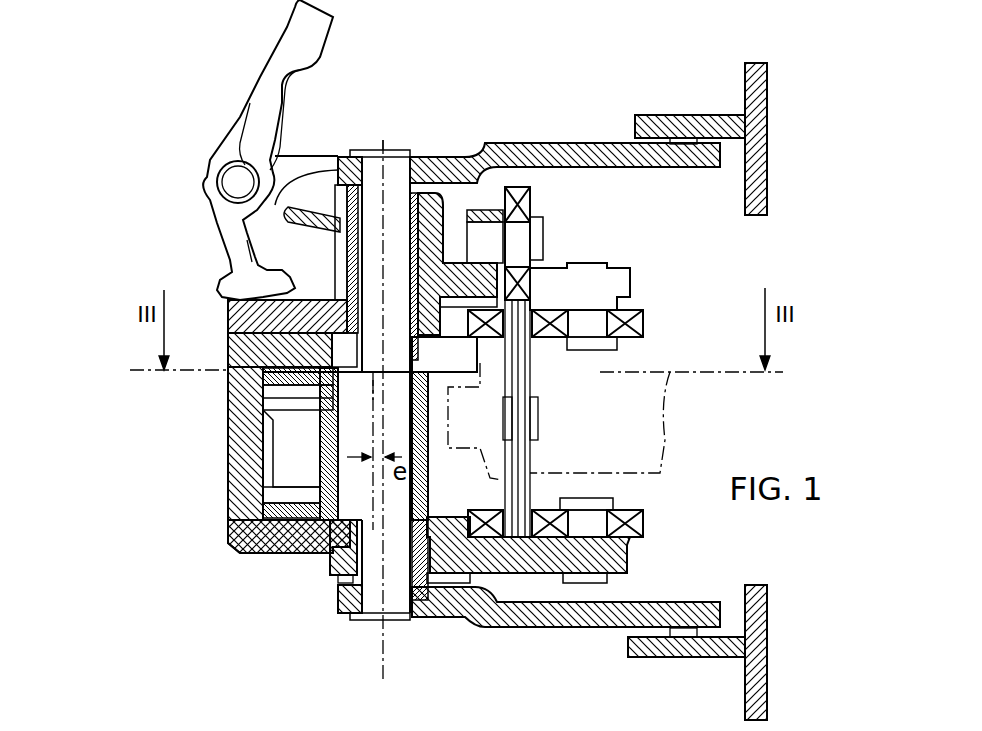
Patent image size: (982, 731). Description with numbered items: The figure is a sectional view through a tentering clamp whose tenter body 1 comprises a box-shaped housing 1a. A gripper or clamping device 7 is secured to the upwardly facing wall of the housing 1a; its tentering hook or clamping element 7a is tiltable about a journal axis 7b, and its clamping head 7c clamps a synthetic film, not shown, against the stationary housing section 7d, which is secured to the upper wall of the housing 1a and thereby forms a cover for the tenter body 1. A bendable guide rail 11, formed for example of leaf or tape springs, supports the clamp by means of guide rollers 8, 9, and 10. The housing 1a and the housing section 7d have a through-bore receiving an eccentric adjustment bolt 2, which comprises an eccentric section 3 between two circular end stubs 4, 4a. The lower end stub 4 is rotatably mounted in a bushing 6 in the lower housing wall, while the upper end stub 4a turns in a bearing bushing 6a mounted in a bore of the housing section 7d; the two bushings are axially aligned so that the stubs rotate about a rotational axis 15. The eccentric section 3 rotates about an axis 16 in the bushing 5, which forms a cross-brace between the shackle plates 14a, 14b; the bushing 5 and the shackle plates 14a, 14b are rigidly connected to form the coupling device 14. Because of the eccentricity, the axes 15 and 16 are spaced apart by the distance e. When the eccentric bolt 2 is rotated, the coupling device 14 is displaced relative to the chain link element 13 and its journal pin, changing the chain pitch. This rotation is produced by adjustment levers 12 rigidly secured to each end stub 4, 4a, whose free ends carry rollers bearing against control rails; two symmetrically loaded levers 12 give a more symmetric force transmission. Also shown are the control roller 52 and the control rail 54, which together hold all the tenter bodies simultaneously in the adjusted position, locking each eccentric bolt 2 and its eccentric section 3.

The tenter body 1 is at (206, 515).
The housing 1a is at (225, 543).
The eccentric adjustment bolt 2 is at (395, 597).
The eccentric section 3 is at (280, 555).
The circular end stub 4 is at (360, 607).
The upper circular end stub 4a is at (350, 162).
The bushing 5 is at (325, 555).
The bushing 6 is at (428, 592).
The bearing bushing 6a is at (347, 262).
The clamping device 7 is at (188, 156).
The clamping element 7a is at (252, 108).
The journal axis 7b is at (230, 187).
The clamping head 7c is at (228, 274).
The housing section 7d is at (228, 314).
The guide roller 8 is at (523, 210).
The guide roller 9 is at (627, 306).
The guide roller 10 is at (472, 330).
The guide rail 11 is at (525, 460).
The adjustment lever 12 is at (525, 150).
The chain link element 13 is at (283, 440).
The coupling device 14 is at (426, 470).
The shackle plate 14a is at (262, 369).
The shackle plate 14b is at (242, 560).
The rotational axis 15 is at (390, 168).
The axis 16 is at (373, 423).
The control roller 52 is at (720, 118).
The control rail 54 is at (765, 92).